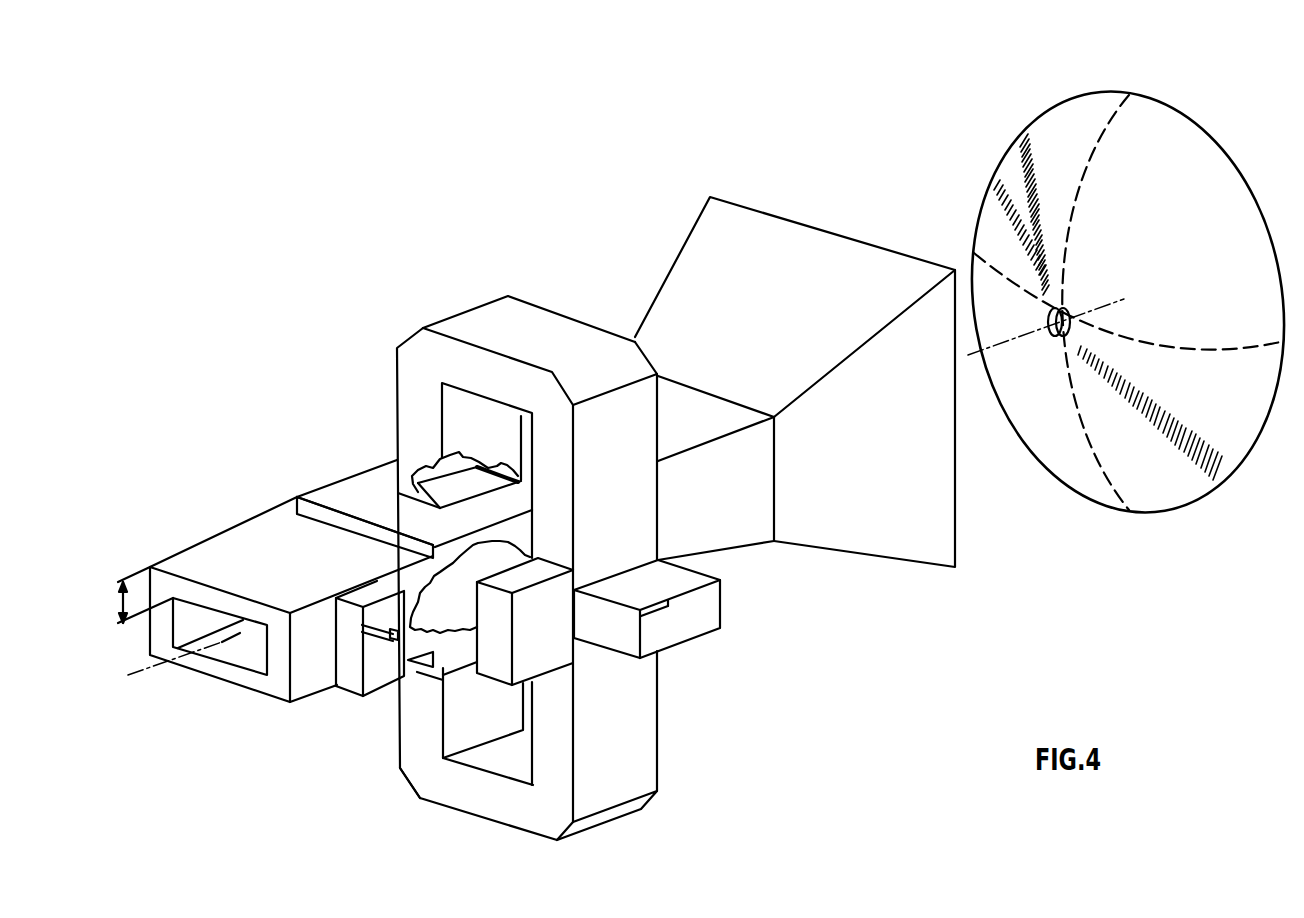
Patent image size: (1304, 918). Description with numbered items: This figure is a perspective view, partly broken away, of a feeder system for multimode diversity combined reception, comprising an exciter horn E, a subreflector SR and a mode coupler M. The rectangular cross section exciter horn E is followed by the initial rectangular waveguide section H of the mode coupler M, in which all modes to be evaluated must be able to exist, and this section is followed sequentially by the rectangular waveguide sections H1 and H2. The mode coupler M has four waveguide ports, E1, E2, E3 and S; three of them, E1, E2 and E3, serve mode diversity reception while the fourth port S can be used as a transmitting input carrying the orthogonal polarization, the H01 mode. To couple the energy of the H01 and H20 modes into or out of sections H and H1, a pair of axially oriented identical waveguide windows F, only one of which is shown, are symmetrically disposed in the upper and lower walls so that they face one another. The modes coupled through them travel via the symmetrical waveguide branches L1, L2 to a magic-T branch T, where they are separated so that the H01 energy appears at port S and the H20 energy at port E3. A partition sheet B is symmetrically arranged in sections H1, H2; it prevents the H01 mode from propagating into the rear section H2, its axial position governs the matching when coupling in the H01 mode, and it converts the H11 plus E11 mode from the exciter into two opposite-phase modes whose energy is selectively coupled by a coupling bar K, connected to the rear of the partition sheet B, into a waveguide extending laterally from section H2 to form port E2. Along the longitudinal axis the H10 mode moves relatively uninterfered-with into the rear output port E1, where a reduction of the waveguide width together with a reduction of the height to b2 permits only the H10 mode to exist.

The mode coupler M is at (527, 535).
The waveguide branch L1 is at (529, 336).
The waveguide branch L2 is at (430, 784).
The rectangular waveguide section H1 is at (378, 493).
The rectangular waveguide section H2 is at (265, 552).
The output port E1 is at (220, 636).
The output port E2 is at (370, 638).
The output port E3 is at (647, 609).
The coupling bar K is at (376, 619).
The waveguide window F is at (465, 475).
The partition sheet B is at (437, 593).
The input port S is at (525, 621).
The magic-T branch T is at (641, 543).
The rectangular waveguide section H is at (716, 468).
The exciter horn E is at (795, 382).
The subreflector SR is at (1199, 160).
The waveguide height b2 is at (145, 597).
The H10 mode H10 is at (222, 642).
The H20 mode H20 is at (700, 603).
The H01 mode H01 is at (497, 628).
The H11+E11 mode H11 is at (373, 658).